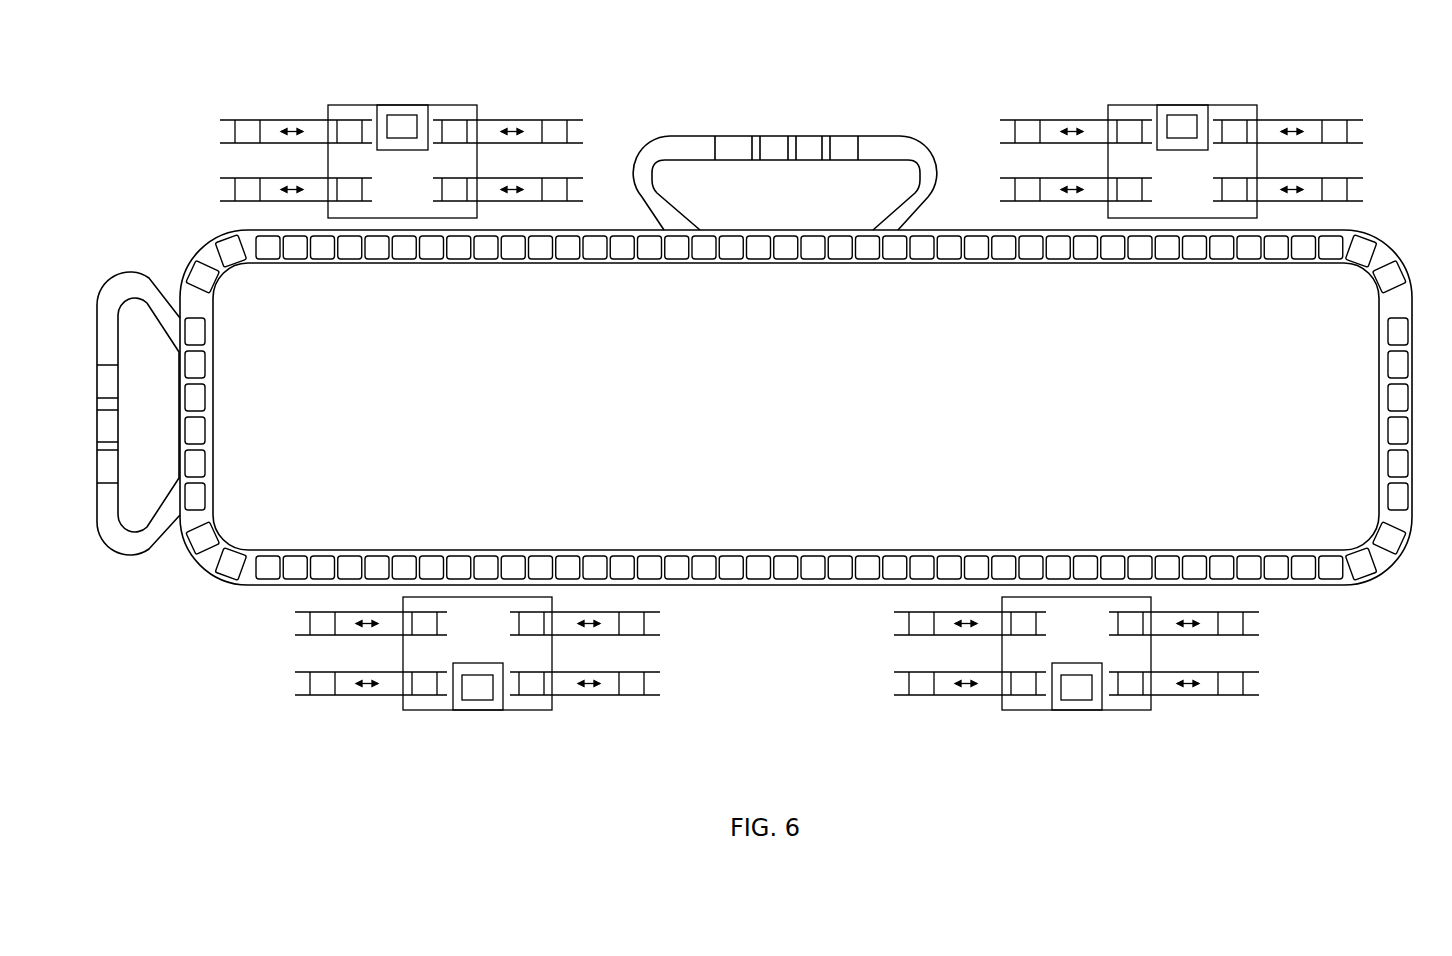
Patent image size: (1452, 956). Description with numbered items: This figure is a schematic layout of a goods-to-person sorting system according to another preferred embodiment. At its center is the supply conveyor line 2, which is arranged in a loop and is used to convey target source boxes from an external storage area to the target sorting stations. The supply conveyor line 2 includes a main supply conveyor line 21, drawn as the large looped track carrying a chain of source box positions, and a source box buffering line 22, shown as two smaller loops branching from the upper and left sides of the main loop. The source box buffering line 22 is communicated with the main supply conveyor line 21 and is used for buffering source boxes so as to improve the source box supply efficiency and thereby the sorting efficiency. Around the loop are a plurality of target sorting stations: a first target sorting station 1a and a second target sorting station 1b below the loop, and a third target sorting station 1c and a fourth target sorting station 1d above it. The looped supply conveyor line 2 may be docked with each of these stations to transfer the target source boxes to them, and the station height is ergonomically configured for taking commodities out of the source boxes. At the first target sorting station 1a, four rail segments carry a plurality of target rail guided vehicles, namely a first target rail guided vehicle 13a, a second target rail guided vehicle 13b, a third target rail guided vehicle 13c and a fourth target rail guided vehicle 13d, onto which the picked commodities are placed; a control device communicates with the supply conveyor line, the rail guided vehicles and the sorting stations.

The first target sorting station 1a is at (477, 639).
The second target sorting station 1b is at (1106, 702).
The third target sorting station 1c is at (1238, 108).
The fourth target sorting station 1d is at (344, 108).
The supply conveyor line 2 is at (1410, 330).
The main supply conveyor line 21 is at (1392, 288).
The source box buffering line 22 is at (731, 138).
The first target rail guided vehicle 13a is at (437, 620).
The second target rail guided vehicle 13b is at (612, 617).
The third target rail guided vehicle 13c is at (420, 692).
The fourth target rail guided vehicle 13d is at (596, 696).